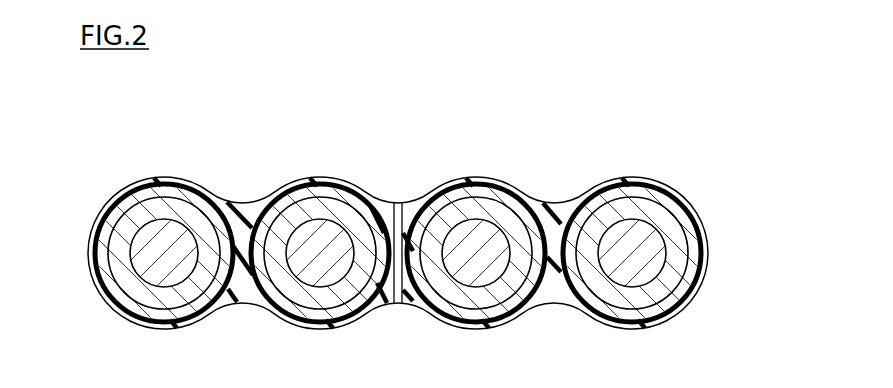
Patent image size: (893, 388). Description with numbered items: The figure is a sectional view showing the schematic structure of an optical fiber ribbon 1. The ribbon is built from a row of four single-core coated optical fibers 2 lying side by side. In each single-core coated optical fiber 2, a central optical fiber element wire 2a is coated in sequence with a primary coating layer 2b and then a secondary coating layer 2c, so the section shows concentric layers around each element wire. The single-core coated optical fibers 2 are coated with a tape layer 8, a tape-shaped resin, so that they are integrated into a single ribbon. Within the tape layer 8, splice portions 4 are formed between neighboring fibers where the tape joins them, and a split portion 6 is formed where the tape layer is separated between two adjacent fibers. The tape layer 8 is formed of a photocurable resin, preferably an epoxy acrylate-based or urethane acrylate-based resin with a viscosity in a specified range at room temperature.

The optical fiber ribbon 1 is at (259, 124).
The single-core coated optical fiber 2 is at (457, 278).
The optical fiber element wire 2a is at (449, 254).
The primary coating layer 2b is at (673, 246).
The secondary coating layer 2c is at (684, 211).
The splice portion 4 is at (242, 243).
The split portion 6 is at (398, 303).
The tape layer 8 is at (637, 180).